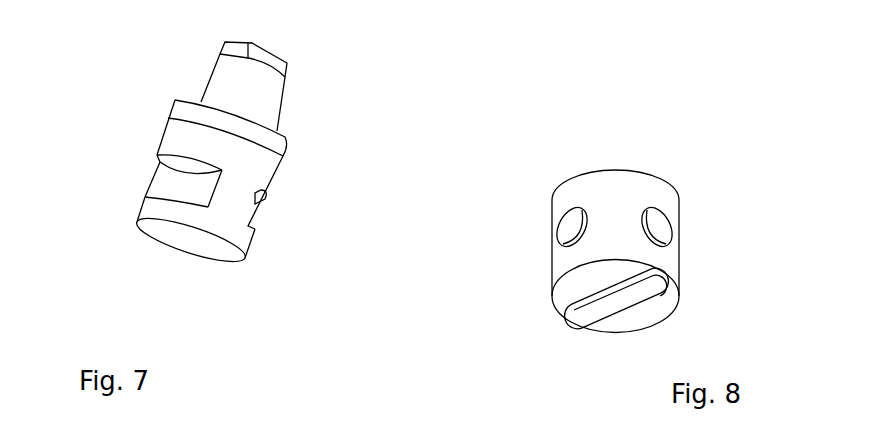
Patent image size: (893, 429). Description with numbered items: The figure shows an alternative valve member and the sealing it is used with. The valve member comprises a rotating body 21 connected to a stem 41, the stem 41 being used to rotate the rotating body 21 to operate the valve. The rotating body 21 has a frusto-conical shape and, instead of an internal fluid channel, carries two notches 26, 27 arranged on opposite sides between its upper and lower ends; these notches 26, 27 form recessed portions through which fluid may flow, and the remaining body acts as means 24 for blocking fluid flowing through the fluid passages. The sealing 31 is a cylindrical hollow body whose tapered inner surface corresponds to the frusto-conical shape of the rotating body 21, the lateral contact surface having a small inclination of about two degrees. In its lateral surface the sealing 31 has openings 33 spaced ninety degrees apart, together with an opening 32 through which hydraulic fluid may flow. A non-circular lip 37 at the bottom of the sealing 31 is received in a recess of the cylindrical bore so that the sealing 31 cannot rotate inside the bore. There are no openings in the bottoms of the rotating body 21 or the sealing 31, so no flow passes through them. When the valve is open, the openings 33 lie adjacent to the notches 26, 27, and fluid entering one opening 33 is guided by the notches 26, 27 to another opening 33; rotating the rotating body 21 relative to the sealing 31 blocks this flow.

In FIG. 7, the rotating body 21 is at (278, 170).
In FIG. 7, the means for blocking fluid 24 is at (237, 202).
In FIG. 7, the notch 26 is at (157, 180).
In FIG. 7, the notch 27 is at (257, 206).
In FIG. 7, the stem 41 is at (262, 93).
In FIG. 8, the sealing 31 is at (668, 267).
In FIG. 8, the opening 32 is at (655, 223).
In FIG. 8, the opening 33 is at (578, 230).
In FIG. 8, the non-circular lip 37 is at (563, 325).